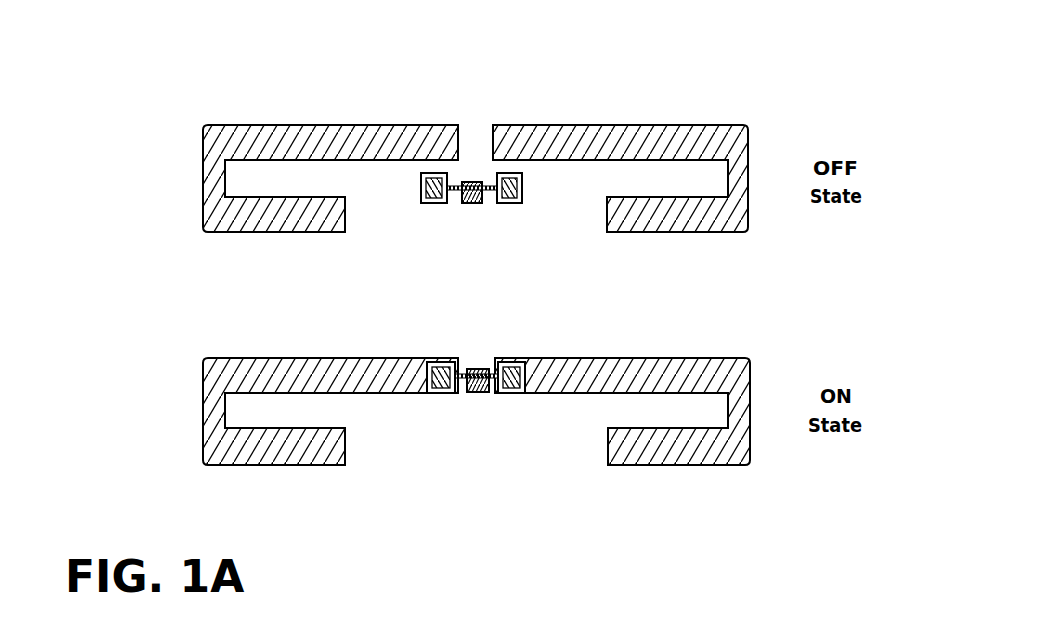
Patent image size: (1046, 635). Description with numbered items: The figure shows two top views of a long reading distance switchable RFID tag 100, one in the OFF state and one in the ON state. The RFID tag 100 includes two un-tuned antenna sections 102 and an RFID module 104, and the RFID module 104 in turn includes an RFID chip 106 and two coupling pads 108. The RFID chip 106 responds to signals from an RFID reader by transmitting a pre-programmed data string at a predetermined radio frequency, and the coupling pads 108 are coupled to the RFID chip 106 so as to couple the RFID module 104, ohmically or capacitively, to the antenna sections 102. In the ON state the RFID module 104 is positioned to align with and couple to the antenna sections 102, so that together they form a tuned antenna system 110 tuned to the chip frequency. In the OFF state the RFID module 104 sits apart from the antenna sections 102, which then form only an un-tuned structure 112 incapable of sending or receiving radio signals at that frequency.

The switchable RFID tag 100 is at (737, 88).
The un-tuned antenna sections 102 is at (266, 353).
The RFID module 104 is at (432, 209).
The RFID chip 106 is at (472, 175).
The coupling pads 108 is at (421, 185).
The tuned antenna system 110 is at (184, 395).
The un-tuned structure 112 is at (193, 143).